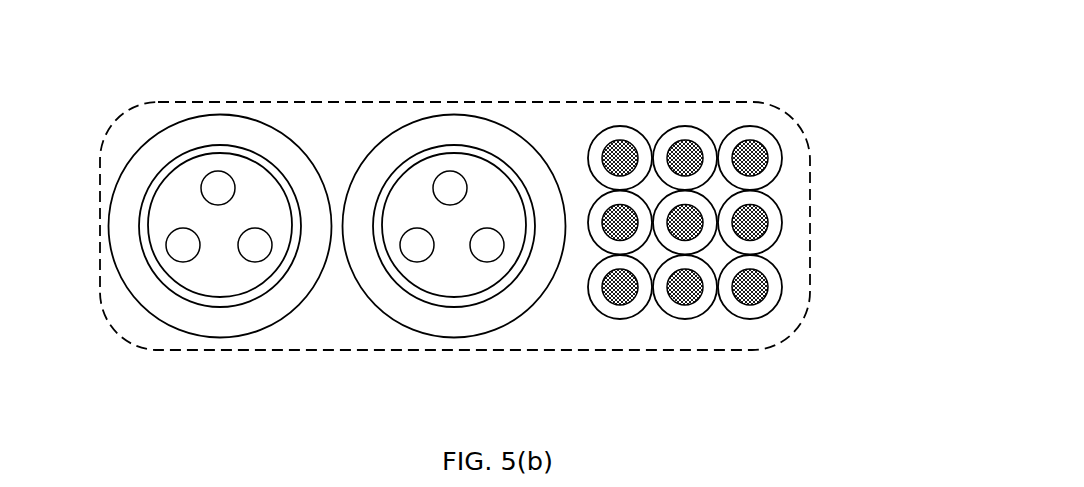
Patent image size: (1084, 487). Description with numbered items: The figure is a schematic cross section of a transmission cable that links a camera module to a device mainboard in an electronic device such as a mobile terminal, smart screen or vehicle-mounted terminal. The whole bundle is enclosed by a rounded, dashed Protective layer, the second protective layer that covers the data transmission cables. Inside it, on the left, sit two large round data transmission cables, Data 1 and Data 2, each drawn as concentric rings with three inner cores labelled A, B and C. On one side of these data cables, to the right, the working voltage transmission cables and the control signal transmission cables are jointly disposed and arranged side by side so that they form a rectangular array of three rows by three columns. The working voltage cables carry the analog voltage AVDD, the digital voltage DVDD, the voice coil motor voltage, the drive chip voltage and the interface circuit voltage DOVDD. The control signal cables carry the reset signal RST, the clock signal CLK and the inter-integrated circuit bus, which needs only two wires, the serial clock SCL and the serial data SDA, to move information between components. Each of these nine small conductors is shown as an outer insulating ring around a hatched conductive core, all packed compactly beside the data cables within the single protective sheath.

The second protective layer Protective layer is at (122, 118).
The data transmission cable Data 1 is at (233, 168).
The data transmission cable Data 2 is at (473, 168).
The analog voltage transmission cable AVDD is at (617, 143).
The digital voltage transmission cable DVDD is at (680, 143).
The reset signal transmission cable RST is at (612, 243).
The interface circuit voltage transmission cable DOVDD is at (677, 243).
The clock signal transmission cable CLK is at (613, 303).
The serial clock transmission cable SCL is at (687, 303).
The serial data transmission cable SDA is at (750, 303).